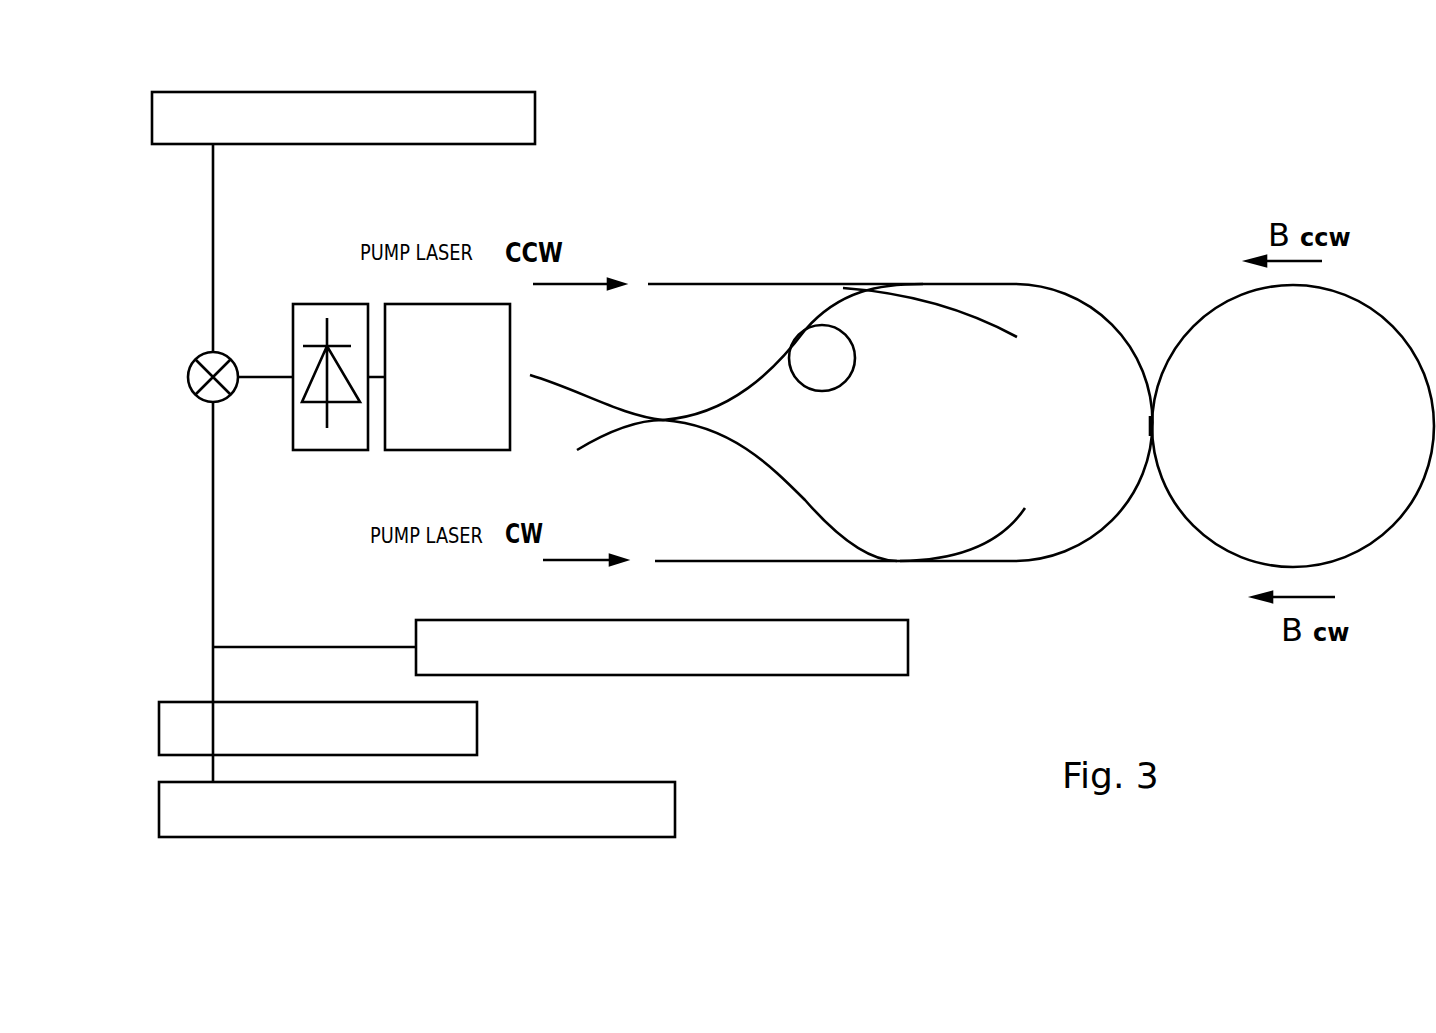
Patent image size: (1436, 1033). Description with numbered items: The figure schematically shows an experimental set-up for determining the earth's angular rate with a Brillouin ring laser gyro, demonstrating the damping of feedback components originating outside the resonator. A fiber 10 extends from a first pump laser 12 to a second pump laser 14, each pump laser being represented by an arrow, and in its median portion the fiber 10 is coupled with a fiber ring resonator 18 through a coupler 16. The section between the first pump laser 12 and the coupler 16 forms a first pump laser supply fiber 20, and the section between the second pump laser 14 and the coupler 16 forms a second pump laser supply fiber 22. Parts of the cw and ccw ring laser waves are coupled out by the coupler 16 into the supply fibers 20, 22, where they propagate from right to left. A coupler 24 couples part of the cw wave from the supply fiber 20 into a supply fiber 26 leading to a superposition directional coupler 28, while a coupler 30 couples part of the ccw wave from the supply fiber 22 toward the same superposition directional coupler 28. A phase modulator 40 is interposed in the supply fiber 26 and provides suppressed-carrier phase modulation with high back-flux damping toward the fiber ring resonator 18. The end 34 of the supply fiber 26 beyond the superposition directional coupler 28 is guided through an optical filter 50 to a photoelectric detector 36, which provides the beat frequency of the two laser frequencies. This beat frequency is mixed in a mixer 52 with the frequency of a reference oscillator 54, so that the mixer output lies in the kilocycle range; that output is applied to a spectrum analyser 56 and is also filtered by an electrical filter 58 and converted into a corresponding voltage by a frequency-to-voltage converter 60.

The fiber 10 is at (1092, 283).
The first pump laser 12 is at (572, 280).
The second pump laser 14 is at (570, 562).
The coupler 16 is at (1155, 426).
The fiber ring resonator 18 is at (1372, 309).
The first pump laser supply fiber 20 is at (710, 284).
The second pump laser supply fiber 22 is at (768, 561).
The coupler 24 is at (917, 285).
The supply fiber 26 is at (847, 300).
The superposition directional coupler 28 is at (663, 420).
The coupler 30 is at (922, 565).
The end 34 is at (563, 383).
The photoelectric detector 36 is at (323, 402).
The phase modulator 40 is at (820, 380).
The optical filter 50 is at (427, 438).
The mixer 52 is at (187, 375).
The reference oscillator 54 is at (525, 98).
The spectrum analyser 56 is at (670, 618).
The electrical filter 58 is at (277, 702).
The frequency-to-voltage converter 60 is at (565, 782).